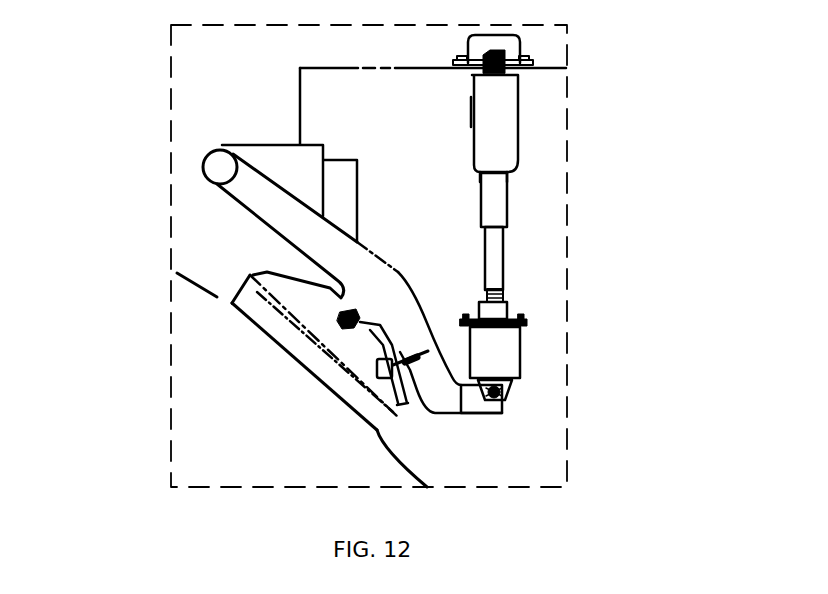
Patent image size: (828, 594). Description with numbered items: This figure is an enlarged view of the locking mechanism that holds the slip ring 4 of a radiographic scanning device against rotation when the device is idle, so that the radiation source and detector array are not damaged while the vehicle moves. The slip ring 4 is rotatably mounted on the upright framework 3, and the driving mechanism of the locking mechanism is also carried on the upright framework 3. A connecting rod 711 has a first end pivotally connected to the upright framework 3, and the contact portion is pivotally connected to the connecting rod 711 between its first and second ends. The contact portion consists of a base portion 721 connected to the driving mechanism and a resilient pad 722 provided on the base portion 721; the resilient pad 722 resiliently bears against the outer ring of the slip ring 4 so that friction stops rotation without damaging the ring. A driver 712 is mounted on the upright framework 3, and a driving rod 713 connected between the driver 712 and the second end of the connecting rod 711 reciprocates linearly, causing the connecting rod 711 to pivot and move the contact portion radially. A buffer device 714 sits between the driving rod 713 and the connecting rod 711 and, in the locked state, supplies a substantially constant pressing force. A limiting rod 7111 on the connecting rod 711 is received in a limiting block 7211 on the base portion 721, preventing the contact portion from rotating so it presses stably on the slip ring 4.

The upright framework 3 is at (290, 158).
The connecting rod 711 is at (260, 197).
The base portion 721 is at (280, 298).
The resilient pad 722 is at (233, 304).
The slip ring 4 is at (203, 288).
The limiting block 7211 is at (375, 365).
The limiting rod 7111 is at (428, 351).
The driver 712 is at (500, 136).
The driving rod 713 is at (492, 260).
The buffer device 714 is at (492, 362).